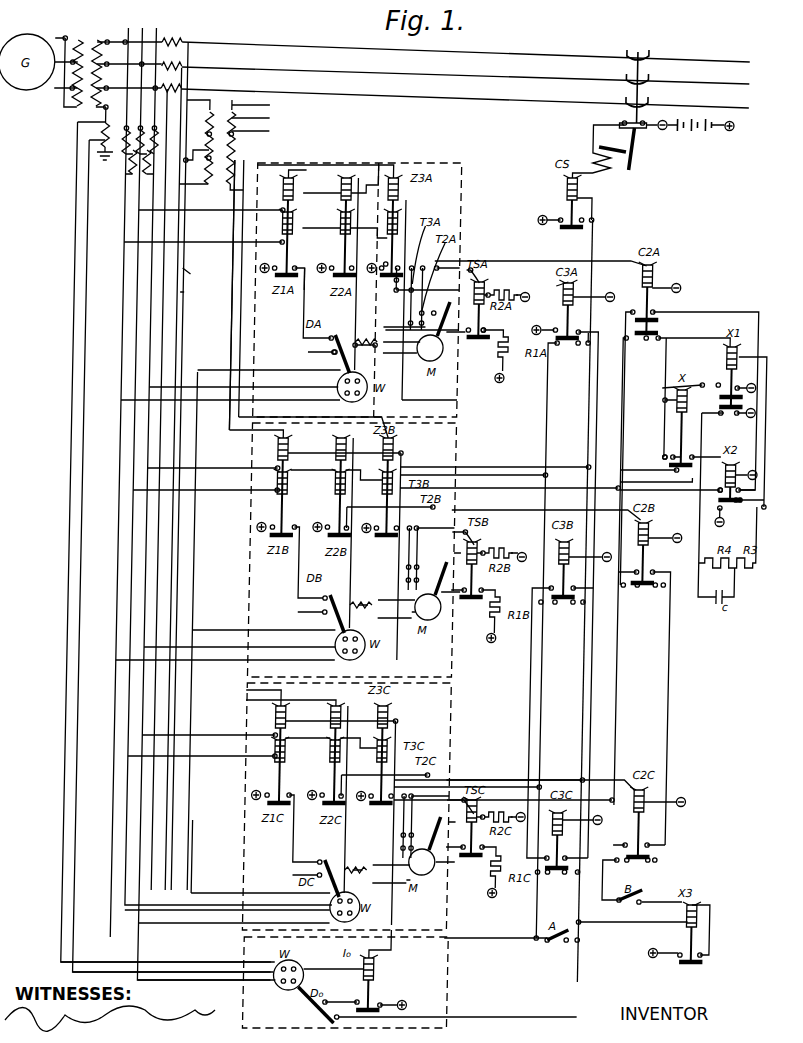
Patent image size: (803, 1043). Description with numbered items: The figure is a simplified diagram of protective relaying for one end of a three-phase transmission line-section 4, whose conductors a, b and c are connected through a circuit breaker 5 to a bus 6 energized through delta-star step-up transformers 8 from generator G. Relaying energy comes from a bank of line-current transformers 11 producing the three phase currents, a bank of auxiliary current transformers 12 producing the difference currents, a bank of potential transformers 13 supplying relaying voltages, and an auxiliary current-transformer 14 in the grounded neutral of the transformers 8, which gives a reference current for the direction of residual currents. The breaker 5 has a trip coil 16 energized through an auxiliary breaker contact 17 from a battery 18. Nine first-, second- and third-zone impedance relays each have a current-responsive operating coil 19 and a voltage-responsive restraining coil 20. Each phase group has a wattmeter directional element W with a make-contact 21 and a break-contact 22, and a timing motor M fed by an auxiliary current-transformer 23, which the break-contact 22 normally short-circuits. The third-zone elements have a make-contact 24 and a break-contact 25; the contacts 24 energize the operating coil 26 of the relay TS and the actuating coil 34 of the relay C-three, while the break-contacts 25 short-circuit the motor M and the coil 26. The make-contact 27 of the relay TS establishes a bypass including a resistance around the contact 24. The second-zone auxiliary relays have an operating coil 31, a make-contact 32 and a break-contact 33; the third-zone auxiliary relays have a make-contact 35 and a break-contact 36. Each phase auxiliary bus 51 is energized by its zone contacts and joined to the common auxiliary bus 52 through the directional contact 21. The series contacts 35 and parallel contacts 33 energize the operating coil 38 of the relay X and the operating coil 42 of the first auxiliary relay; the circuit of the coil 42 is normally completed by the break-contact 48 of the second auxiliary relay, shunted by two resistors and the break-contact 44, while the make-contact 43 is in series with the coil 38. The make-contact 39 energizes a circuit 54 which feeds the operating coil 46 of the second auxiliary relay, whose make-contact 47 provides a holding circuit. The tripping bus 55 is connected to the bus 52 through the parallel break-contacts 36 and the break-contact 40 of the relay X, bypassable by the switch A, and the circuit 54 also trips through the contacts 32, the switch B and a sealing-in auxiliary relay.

The three-phase transmission line-section 4 is at (668, 104).
The circuit breaker 5 is at (632, 55).
The bus 6 is at (116, 30).
The delta-star step-up transformers 8 is at (78, 39).
The bank of line-current transformers 11 is at (176, 40).
The bank of auxiliary current transformers 12 is at (202, 122).
The bank of potential transformers 13 is at (118, 152).
The auxiliary current-transformer 14 is at (95, 130).
The trip coil 16 is at (600, 172).
The auxiliary circuit-breaker contact 17 is at (642, 131).
The battery 18 is at (692, 133).
The current-responsive operating coil 19 is at (338, 180).
The voltage-responsive restraining coil 20 is at (292, 234).
The make-contact of directional element 21 is at (331, 352).
The break-contact of directional element 22 is at (344, 335).
The auxiliary current-transformer 23 is at (367, 347).
The make-contact of third-zone impedance element 24 is at (379, 264).
The break-contact of third-zone impedance element 25 is at (390, 290).
The operating coil of relay TS 26 is at (499, 269).
The make-contact of relay TS 27 is at (482, 330).
The operating coil of relay C2 31 is at (649, 278).
The make-contact of relay C2 32 is at (652, 313).
The break-contact of relay C2 33 is at (648, 341).
The actuating coil of relay C3 34 is at (566, 284).
The make-contact of relay C3 35 is at (552, 326).
The break-contact of relay C3 36 is at (560, 344).
The operating coil of relay X 38 is at (660, 388).
The make-contact of relay X 39 is at (664, 455).
The break-contact of relay X 40 is at (698, 493).
The operating coil of relay X1 42 is at (724, 347).
The make-contact of relay X1 43 is at (715, 380).
The break-contact of relay X1 44 is at (738, 415).
The operating coil of relay X2 46 is at (716, 495).
The make-contact of relay X2 47 is at (740, 503).
The break-contact of relay X2 48 is at (736, 510).
The auxiliary relaying bus 51 is at (300, 282).
The common auxiliary relaying bus 52 is at (306, 364).
The circuit 54 is at (730, 462).
The tripping bus 55 is at (587, 238).